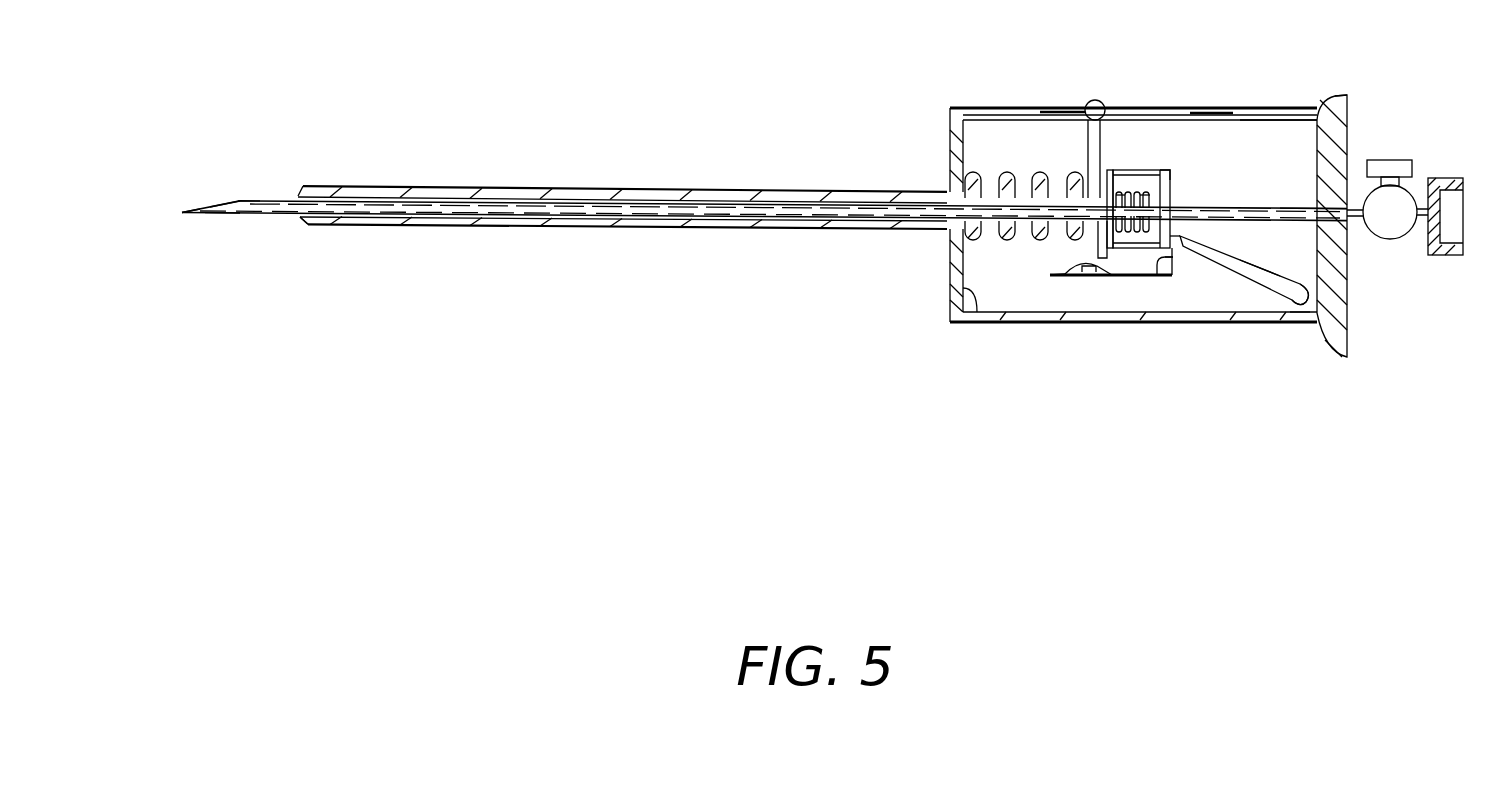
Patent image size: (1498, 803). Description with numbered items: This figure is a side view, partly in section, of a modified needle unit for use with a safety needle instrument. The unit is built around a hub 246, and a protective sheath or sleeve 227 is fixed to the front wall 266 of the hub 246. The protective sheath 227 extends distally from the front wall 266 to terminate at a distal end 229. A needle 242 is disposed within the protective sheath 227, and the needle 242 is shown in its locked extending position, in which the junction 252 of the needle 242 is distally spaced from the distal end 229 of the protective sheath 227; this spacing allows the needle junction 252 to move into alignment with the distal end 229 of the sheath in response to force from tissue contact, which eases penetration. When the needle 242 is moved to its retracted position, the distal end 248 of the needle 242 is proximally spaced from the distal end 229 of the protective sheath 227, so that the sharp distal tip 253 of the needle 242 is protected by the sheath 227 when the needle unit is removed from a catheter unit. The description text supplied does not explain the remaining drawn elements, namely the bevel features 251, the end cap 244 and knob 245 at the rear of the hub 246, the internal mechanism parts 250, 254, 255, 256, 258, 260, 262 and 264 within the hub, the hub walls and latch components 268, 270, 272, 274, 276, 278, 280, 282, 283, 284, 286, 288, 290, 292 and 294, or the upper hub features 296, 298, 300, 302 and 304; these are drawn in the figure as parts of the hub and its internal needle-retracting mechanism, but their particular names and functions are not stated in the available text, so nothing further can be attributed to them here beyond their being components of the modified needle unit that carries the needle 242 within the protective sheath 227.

The protective sheath 227 is at (370, 184).
The distal end of protective sheath 229 is at (300, 226).
The needle 242 is at (277, 190).
The end cap 244 is at (1455, 180).
The knob 245 is at (1392, 160).
The hub 246 is at (1352, 98).
The distal end of needle 248 is at (217, 218).
The spring 250 is at (1122, 186).
The bevel 251 is at (213, 203).
The junction of needle 252 is at (238, 197).
The sharp distal tip of needle 253 is at (175, 214).
The carrier block 254 is at (1176, 166).
The needle proximal portion 255 is at (1292, 205).
The plunger plate 256 is at (1090, 172).
The spring housing 258 is at (1178, 187).
The biasing spring 260 is at (1132, 190).
The spring seat 262 is at (1145, 172).
The main spring 264 is at (1000, 172).
The front wall of hub 266 is at (953, 124).
The latch hook 268 is at (1315, 278).
The latch pivot 270 is at (1200, 285).
The housing bottom wall 272 is at (1297, 320).
The housing lower wall 274 is at (960, 300).
The housing end wall 276 is at (1325, 330).
The latch end 278 is at (1315, 310).
The latch arm 280 is at (1270, 280).
The latch engagement 282 is at (1180, 234).
The lever arm 283 is at (1245, 244).
The pivot block 284 is at (1185, 300).
The lever plate 286 is at (1135, 278).
The lever bump 288 is at (1125, 285).
The trigger plate 290 is at (1100, 268).
The trigger plate end 292 is at (1060, 270).
The trigger plate segment 294 is at (1122, 270).
The top rail 296 is at (1273, 120).
The release button 298 is at (1065, 107).
The top bar segment 300 is at (1198, 113).
The button stem 302 is at (1095, 100).
The top bar segment 304 is at (1230, 117).